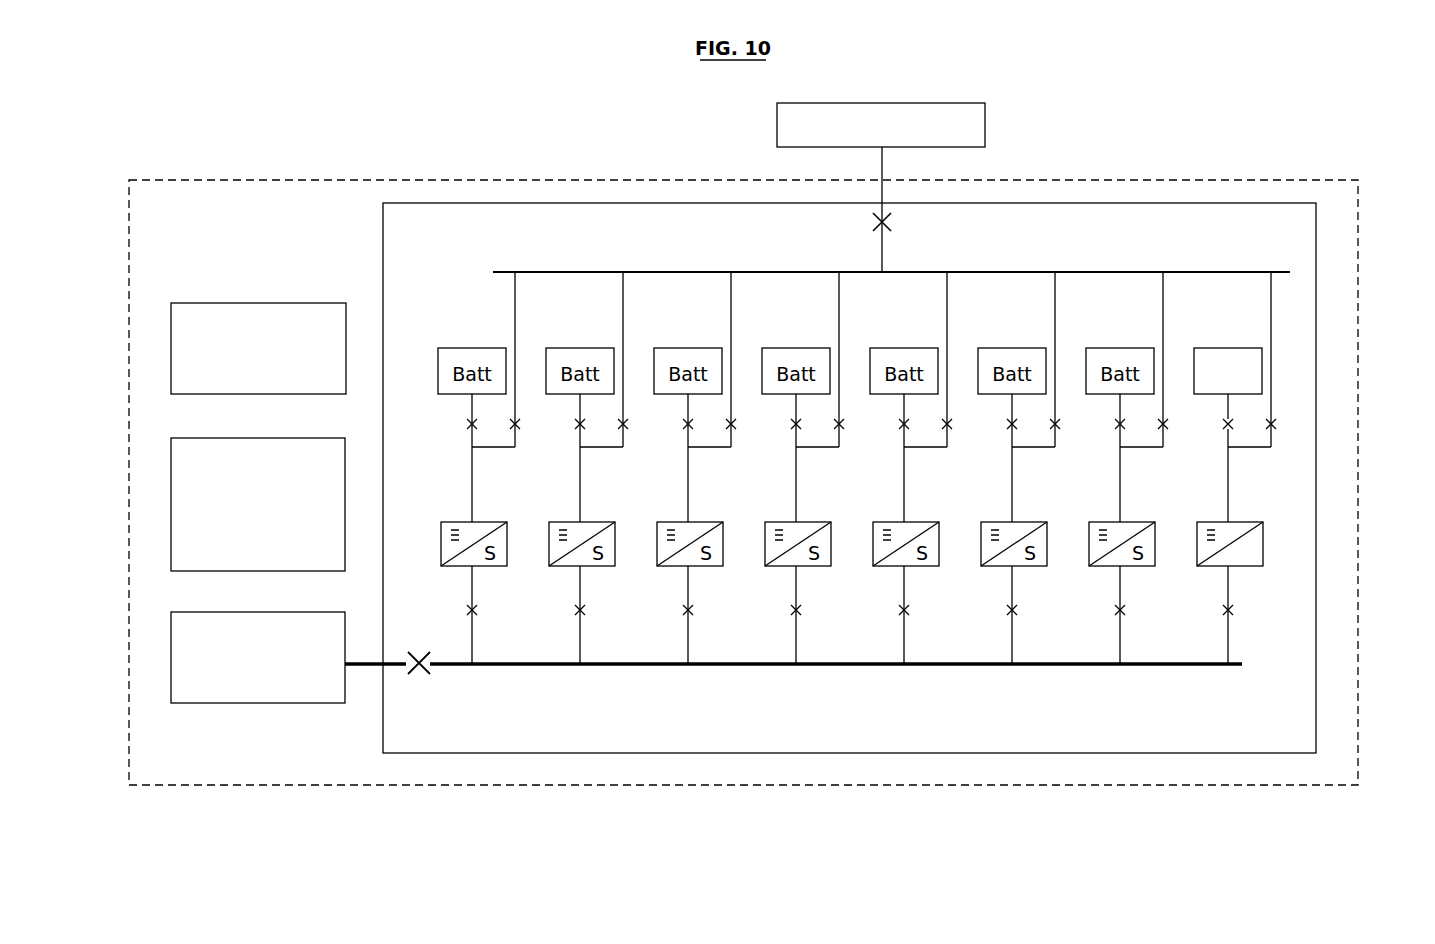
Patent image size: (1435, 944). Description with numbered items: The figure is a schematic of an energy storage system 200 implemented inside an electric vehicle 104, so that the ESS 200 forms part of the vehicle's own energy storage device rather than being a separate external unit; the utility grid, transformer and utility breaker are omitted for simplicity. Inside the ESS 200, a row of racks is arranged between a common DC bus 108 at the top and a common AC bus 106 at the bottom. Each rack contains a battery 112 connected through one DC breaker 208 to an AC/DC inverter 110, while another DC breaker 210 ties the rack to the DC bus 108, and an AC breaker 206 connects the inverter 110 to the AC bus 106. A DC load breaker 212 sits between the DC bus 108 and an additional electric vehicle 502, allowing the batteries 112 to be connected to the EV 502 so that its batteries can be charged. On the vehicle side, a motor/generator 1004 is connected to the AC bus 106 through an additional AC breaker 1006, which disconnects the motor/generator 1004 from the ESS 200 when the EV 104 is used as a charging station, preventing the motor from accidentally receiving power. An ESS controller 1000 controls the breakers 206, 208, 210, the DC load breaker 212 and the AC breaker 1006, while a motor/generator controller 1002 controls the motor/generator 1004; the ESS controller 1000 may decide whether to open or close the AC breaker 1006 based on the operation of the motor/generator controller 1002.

The electric vehicle 104 is at (255, 180).
The energy storage system 200 is at (421, 200).
The DC bus 108 is at (696, 272).
The additional electric vehicle 502 is at (985, 125).
The DC load breaker 212 is at (888, 226).
The ESS controller 1000 is at (295, 302).
The motor/generator controller 1002 is at (170, 490).
The motor/generator 1004 is at (170, 660).
The additional AC breaker 1006 is at (420, 672).
The AC bus 106 is at (1067, 666).
The battery 112 is at (1263, 373).
The DC breaker 210 is at (1278, 428).
The DC breaker 208 is at (1232, 428).
The AC/DC inverter 110 is at (1263, 535).
The AC breaker 206 is at (1234, 607).